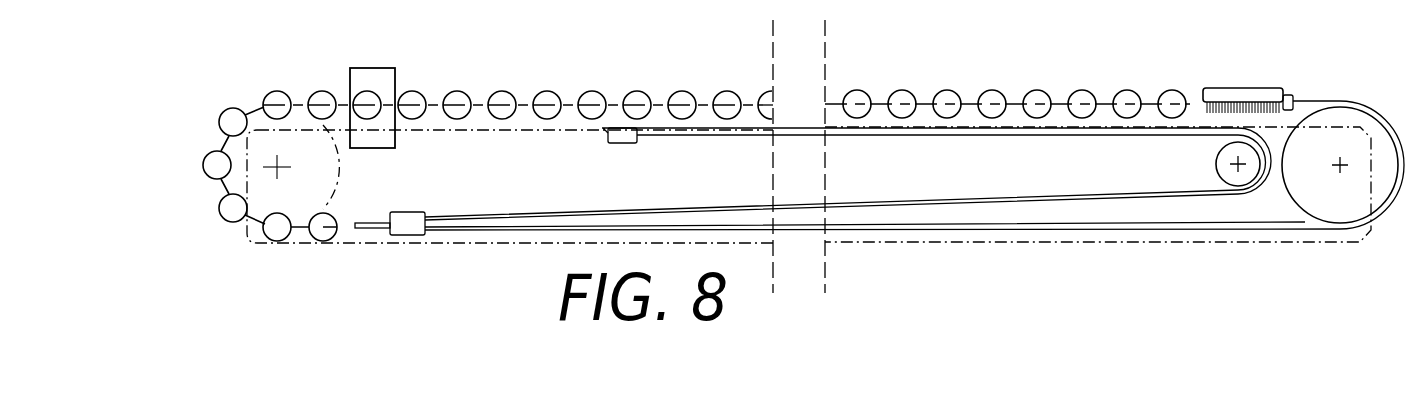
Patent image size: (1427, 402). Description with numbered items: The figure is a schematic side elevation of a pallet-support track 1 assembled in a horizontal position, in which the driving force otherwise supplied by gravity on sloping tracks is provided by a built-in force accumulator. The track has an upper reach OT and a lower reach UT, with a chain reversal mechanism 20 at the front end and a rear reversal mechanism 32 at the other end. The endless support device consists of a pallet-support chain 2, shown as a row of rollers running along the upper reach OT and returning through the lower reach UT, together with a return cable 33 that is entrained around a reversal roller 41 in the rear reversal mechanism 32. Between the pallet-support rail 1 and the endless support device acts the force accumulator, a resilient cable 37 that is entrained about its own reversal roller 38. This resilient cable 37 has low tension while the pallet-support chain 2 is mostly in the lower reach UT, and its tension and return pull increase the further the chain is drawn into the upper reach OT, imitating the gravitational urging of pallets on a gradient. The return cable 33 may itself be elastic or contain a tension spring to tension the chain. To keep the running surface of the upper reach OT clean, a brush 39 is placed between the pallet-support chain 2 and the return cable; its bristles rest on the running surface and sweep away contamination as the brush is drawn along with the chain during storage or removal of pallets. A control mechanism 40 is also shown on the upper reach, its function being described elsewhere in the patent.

The pallet-support track 1 is at (418, 266).
The pallet-support chain 2 is at (592, 100).
The chain reversal mechanism 20 is at (230, 243).
The rear reversal mechanism 32 is at (1303, 258).
The return cable 33 is at (1013, 225).
The resilient cable 37 is at (982, 202).
The reversal roller 38 is at (1227, 163).
The brush 39 is at (1242, 97).
The control mechanism 40 is at (363, 80).
The reversal roller 41 is at (1340, 120).
The upper reach OT is at (200, 107).
The lower reach UT is at (200, 228).